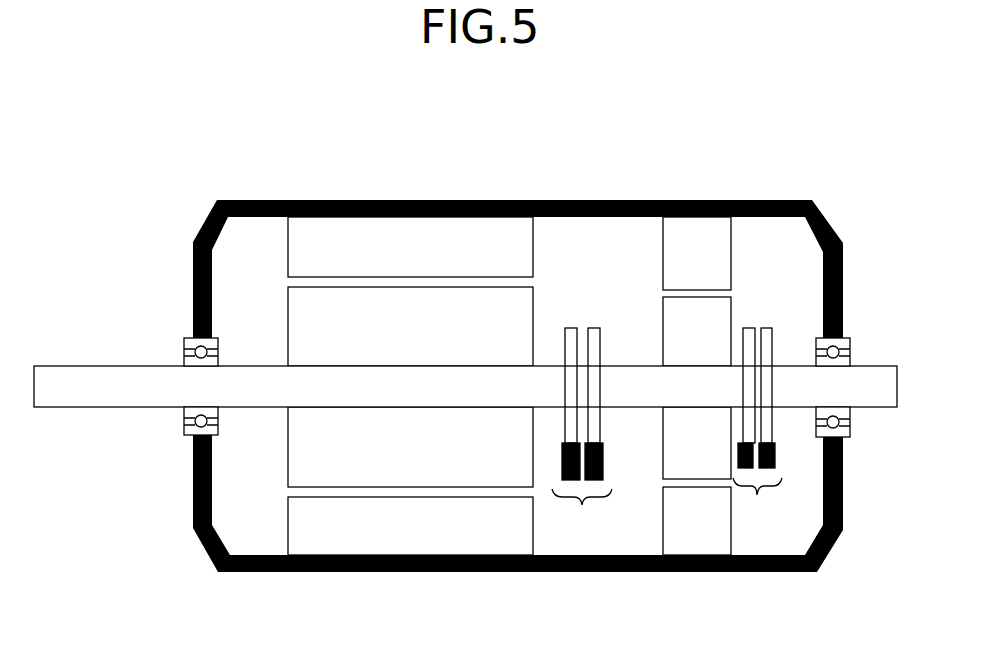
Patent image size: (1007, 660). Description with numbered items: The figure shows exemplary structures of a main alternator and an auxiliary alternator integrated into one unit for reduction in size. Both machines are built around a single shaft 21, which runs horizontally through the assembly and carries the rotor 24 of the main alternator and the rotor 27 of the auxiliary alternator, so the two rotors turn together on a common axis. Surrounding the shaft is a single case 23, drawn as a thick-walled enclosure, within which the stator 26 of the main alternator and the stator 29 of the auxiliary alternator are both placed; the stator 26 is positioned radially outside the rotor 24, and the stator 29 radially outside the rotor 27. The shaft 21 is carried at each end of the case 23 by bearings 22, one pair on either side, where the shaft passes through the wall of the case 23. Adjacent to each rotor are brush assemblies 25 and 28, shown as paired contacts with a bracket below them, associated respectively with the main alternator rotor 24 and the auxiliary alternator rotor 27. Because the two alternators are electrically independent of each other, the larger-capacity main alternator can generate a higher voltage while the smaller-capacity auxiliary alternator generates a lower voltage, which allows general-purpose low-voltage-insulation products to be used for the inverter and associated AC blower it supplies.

The shaft 21 is at (105, 366).
The bearing 22 is at (185, 422).
The case 23 is at (264, 572).
The rotor of the main alternator 24 is at (418, 465).
The brush 25 is at (582, 515).
The stator of the main alternator 26 is at (412, 232).
The rotor of the auxiliary alternator 27 is at (697, 467).
The brush 28 is at (757, 503).
The stator of the auxiliary alternator 29 is at (697, 232).